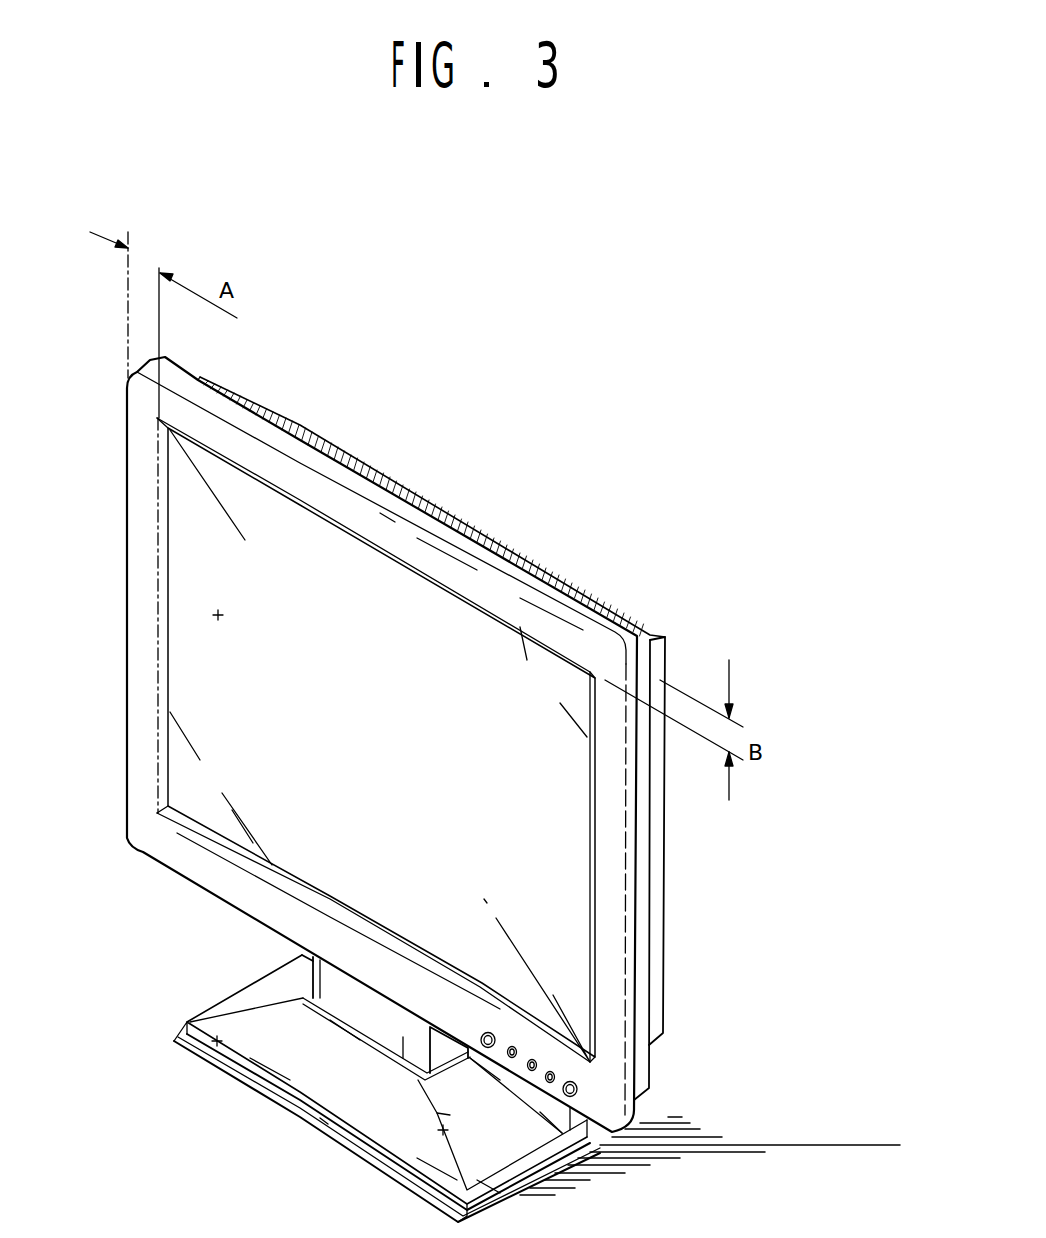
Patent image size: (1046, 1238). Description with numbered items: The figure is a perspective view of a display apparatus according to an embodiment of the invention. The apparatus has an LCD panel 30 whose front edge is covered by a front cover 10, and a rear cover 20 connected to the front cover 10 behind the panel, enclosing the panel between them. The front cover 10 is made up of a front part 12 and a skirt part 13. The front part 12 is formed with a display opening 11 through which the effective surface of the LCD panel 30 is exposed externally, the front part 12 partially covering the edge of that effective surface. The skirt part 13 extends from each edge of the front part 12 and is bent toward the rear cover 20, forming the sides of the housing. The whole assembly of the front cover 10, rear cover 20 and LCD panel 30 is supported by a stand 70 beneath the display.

The front cover 10 is at (462, 399).
The display opening 11 is at (485, 603).
The front part 12 is at (407, 543).
The skirt part 13 is at (317, 440).
The rear cover 20 is at (665, 870).
The LCD panel 30 is at (192, 630).
The stand 70 is at (395, 1032).